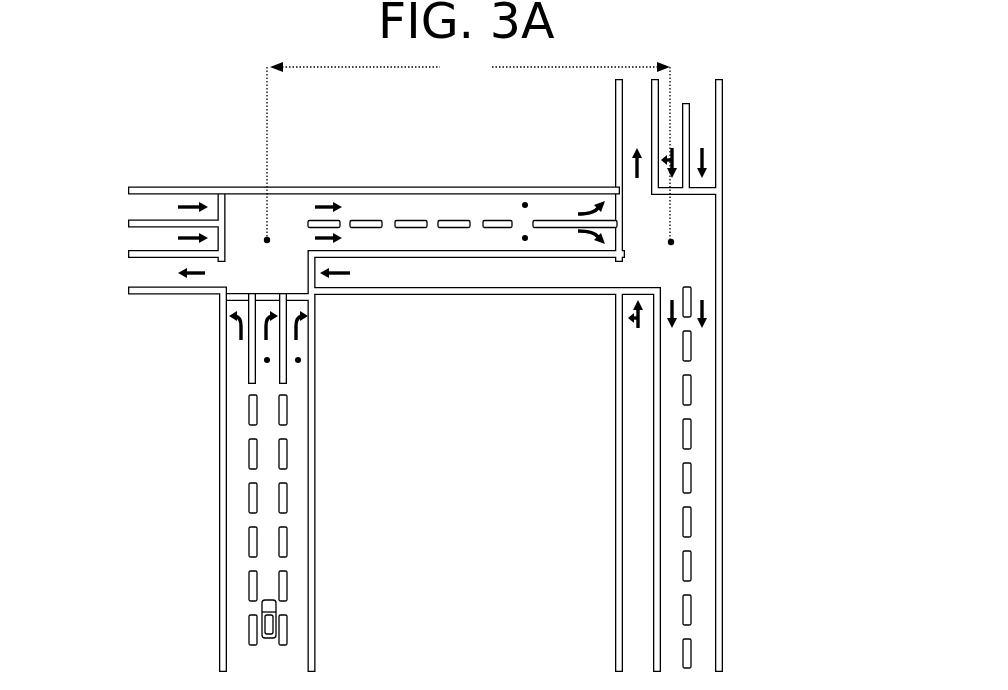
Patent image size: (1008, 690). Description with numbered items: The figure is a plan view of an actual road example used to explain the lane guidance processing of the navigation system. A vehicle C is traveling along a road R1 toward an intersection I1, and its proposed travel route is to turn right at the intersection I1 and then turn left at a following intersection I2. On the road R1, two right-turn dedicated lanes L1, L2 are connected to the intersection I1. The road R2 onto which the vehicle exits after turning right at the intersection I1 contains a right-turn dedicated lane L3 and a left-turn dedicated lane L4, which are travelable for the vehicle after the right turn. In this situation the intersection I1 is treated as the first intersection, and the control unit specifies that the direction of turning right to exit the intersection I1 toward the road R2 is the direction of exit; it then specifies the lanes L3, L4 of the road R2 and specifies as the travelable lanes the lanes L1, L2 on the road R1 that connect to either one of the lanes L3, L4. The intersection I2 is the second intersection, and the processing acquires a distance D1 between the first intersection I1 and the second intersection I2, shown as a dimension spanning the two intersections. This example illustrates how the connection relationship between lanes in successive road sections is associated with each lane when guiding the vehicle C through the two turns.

The intersection (first intersection) I1 is at (267, 240).
The intersection (second intersection) I2 is at (671, 242).
The road R1 is at (220, 618).
The road R2 is at (378, 187).
The right-turn dedicated lane L1 is at (298, 360).
The right-turn dedicated lane L2 is at (267, 360).
The right-turn dedicated lane L3 is at (525, 238).
The left-turn dedicated lane L4 is at (525, 205).
The distance D1 is at (470, 75).
The vehicle C is at (272, 598).